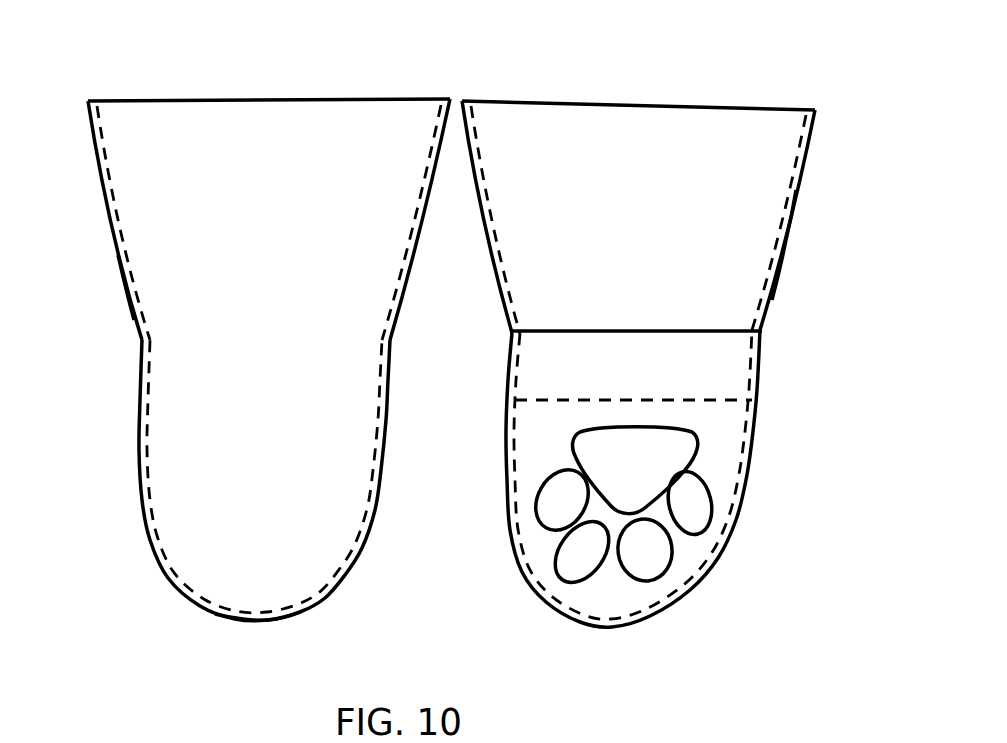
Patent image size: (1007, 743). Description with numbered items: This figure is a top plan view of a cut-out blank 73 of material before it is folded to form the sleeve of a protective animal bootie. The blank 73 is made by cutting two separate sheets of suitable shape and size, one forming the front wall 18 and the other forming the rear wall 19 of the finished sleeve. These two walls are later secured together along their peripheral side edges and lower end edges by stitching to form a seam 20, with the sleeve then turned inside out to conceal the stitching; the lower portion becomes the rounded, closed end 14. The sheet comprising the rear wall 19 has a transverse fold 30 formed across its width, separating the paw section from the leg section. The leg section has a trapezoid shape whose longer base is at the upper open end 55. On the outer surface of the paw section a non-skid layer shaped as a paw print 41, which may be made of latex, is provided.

The blank 73 is at (362, 86).
The front wall 18 is at (160, 258).
The rounded, closed end 14 is at (245, 625).
The upper open end 55 is at (748, 110).
The seam 20 is at (797, 207).
The rear wall 19 is at (735, 293).
The transverse fold 30 is at (765, 372).
The paw print 41 is at (708, 515).